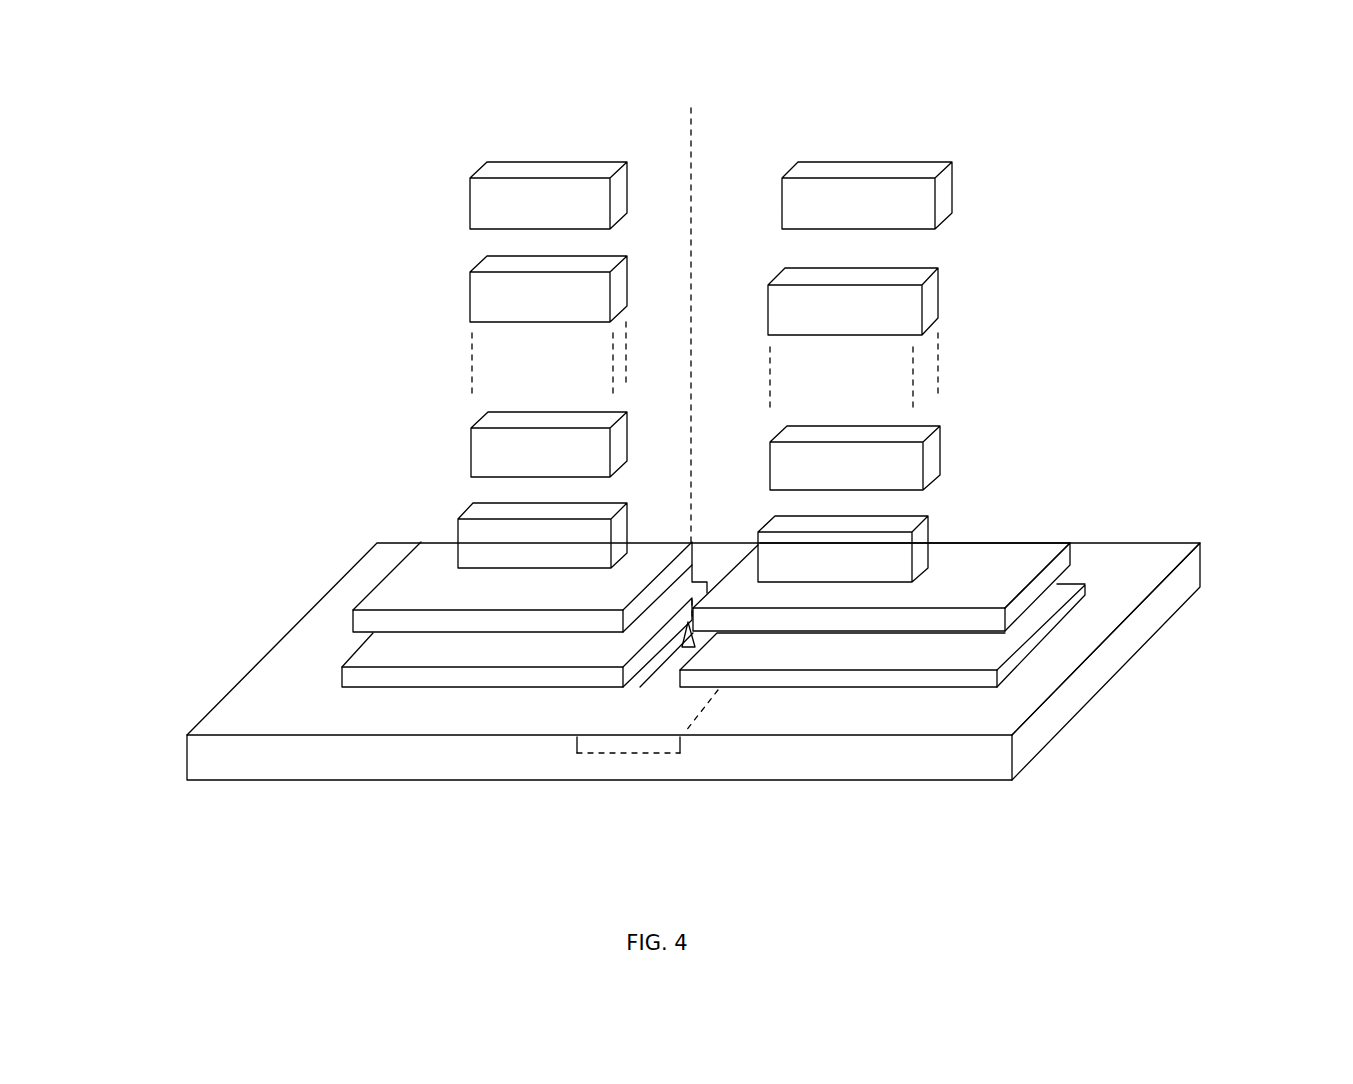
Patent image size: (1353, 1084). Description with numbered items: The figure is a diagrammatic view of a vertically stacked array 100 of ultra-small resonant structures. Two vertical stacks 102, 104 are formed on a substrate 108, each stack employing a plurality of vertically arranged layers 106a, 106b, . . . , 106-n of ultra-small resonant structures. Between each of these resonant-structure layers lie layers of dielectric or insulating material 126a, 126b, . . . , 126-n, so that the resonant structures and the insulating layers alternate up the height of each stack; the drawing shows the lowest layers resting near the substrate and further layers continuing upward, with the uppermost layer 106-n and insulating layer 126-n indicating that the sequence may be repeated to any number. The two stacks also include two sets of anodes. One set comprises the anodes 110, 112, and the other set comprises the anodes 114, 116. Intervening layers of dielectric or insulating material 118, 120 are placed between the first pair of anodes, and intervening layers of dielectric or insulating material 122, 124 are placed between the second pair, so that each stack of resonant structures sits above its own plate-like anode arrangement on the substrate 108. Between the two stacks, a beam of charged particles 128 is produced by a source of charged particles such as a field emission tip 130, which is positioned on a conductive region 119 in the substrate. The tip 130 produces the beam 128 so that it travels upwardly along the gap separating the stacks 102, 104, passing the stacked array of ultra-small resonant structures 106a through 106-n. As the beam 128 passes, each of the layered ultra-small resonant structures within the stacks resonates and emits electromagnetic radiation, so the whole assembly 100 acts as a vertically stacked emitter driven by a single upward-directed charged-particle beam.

The stacked device assembly 100 is at (1177, 374).
The vertical stack 102 is at (954, 164).
The vertical stack 104 is at (479, 160).
The layer of ultra-small resonant structures 106-n is at (483, 202).
The layer of ultra-small resonant structures 106b is at (470, 440).
The layer of ultra-small resonant structures 106a is at (472, 515).
The layer of dielectric or insulating material 126-n is at (497, 242).
The layer of dielectric or insulating material 126b is at (497, 490).
The layer of dielectric or insulating material 126a is at (485, 582).
The substrate 108 is at (1150, 580).
The anode 110 is at (905, 673).
The anode 112 is at (433, 673).
The anode 114 is at (978, 570).
The anode 116 is at (393, 585).
The layer of dielectric or insulating material 118 is at (773, 698).
The conductive region 119 is at (610, 690).
The layer of dielectric or insulating material 120 is at (473, 700).
The layer of dielectric or insulating material 122 is at (1057, 595).
The layer of dielectric or insulating material 124 is at (408, 646).
The beam of charged particles 128 is at (690, 137).
The field emission tip 130 is at (657, 663).